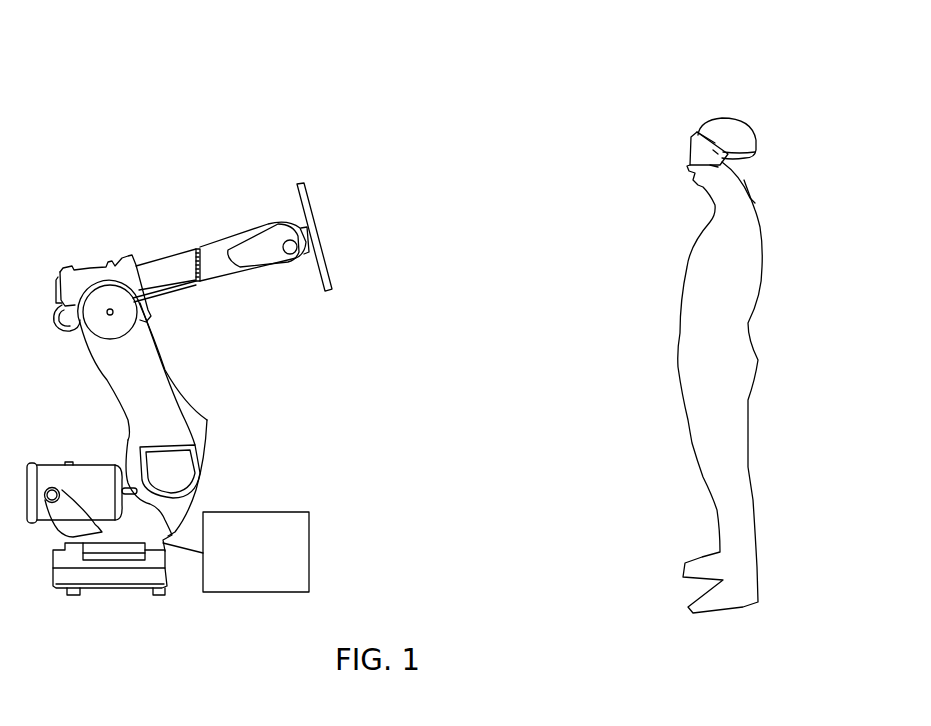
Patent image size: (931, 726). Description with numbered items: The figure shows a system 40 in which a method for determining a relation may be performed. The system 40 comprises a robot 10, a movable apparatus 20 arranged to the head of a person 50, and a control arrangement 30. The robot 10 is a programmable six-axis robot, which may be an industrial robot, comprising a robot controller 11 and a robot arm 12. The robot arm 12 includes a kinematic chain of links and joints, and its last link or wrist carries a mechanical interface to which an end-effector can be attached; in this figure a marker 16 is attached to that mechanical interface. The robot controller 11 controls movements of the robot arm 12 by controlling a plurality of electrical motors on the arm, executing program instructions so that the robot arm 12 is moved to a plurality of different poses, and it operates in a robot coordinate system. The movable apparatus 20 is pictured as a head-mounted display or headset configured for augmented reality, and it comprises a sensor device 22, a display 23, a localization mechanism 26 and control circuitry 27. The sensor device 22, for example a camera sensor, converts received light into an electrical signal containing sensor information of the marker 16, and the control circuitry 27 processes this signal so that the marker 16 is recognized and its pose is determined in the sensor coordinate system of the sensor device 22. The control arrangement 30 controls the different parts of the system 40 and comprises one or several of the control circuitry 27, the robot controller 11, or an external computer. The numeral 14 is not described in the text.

The robot 10 is at (170, 263).
The robot controller 11 is at (255, 520).
The robot arm 12 is at (145, 367).
The end effector 14 is at (297, 227).
The marker 16 is at (316, 211).
The movable apparatus 20 is at (697, 138).
The sensor device 22 is at (700, 135).
The display 23 is at (715, 152).
The localization mechanism 26 is at (752, 200).
The control circuitry 27 is at (715, 167).
The control arrangement 30 is at (527, 472).
The system 40 is at (489, 519).
The person 50 is at (687, 288).